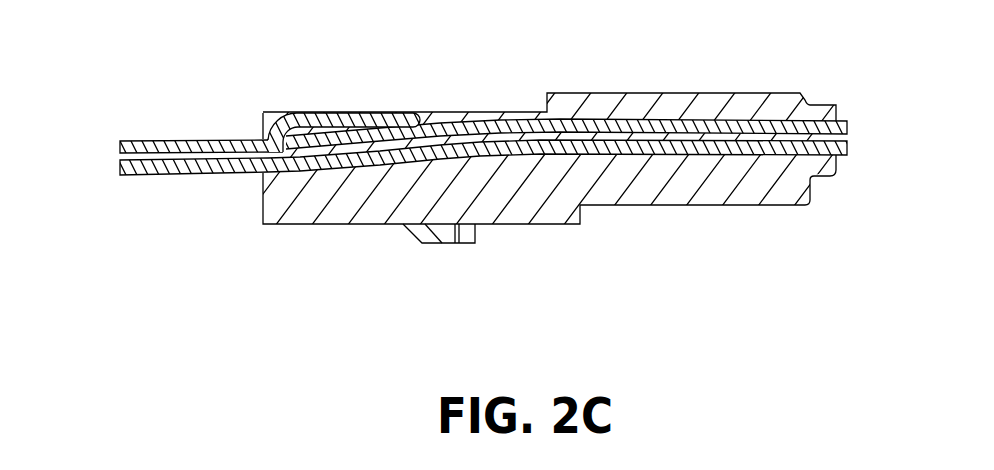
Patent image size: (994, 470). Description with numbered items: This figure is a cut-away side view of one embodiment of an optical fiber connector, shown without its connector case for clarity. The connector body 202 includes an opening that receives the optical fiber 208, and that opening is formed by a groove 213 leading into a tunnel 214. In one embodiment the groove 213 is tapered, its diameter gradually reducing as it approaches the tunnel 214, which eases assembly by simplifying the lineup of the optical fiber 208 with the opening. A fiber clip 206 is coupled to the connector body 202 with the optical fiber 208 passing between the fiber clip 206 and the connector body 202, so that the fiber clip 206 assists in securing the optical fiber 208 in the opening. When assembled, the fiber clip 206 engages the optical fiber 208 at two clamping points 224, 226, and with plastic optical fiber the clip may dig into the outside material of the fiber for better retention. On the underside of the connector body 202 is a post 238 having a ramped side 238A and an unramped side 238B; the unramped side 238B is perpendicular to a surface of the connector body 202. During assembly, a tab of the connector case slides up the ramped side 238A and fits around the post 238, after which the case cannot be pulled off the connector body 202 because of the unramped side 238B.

The connector body 202 is at (803, 186).
The fiber clip 206 is at (318, 112).
The optical fiber 208 is at (118, 149).
The groove 213 is at (387, 175).
The tunnel 214 is at (640, 153).
The clamping point 224 is at (424, 118).
The clamping point 226 is at (275, 166).
The post 238 is at (442, 248).
The ramped side 238A is at (413, 237).
The unramped side 238B is at (476, 232).